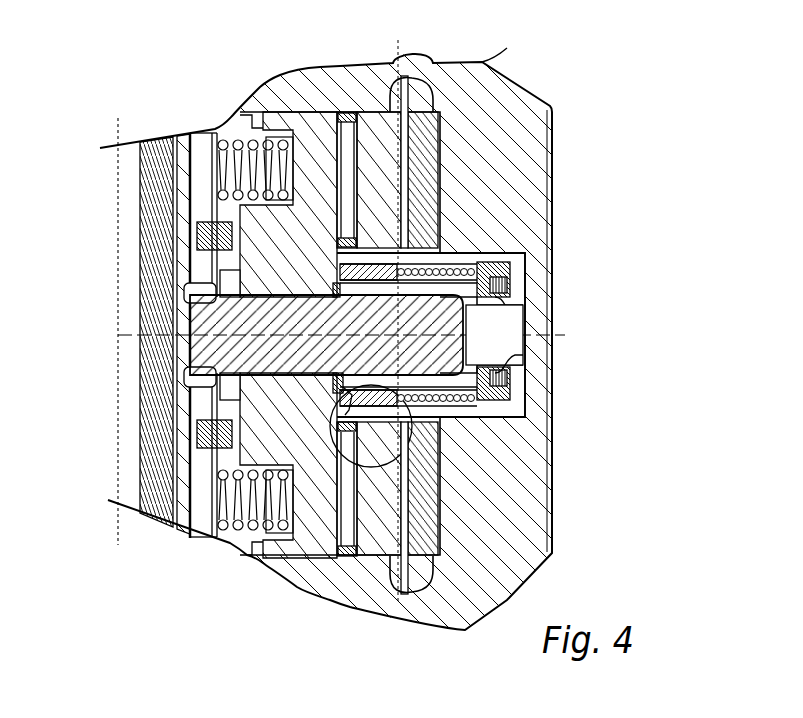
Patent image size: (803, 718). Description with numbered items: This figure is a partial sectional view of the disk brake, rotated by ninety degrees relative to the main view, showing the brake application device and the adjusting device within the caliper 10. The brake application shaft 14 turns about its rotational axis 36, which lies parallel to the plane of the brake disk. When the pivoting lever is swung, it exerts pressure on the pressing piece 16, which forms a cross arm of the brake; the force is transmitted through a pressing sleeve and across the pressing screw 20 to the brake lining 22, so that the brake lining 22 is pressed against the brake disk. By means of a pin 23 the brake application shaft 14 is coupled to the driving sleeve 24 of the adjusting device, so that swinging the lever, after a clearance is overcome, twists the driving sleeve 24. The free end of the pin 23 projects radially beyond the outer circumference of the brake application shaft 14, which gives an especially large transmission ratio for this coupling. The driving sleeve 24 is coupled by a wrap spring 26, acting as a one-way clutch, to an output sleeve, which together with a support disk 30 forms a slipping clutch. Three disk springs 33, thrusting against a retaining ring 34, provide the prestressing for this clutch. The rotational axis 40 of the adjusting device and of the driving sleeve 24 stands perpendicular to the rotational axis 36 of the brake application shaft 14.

The caliper 10 is at (552, 553).
The brake application shaft 14 is at (380, 533).
The pressing piece 16 is at (275, 542).
The pressing screw 20 is at (213, 353).
The brake lining 22 is at (157, 517).
The pin 23 is at (380, 408).
The driving sleeve 24 is at (370, 267).
The wrap spring 26 is at (455, 270).
The support disk 30 is at (503, 272).
The disk springs 33 is at (524, 316).
The retaining ring 34 is at (540, 378).
The rotational axis 36 is at (404, 572).
The rotational axis 40 is at (530, 333).